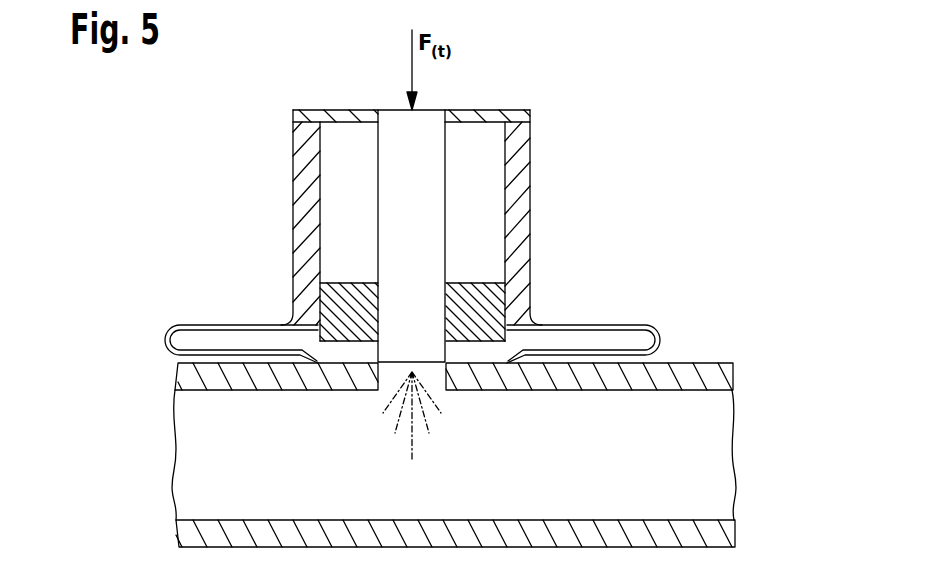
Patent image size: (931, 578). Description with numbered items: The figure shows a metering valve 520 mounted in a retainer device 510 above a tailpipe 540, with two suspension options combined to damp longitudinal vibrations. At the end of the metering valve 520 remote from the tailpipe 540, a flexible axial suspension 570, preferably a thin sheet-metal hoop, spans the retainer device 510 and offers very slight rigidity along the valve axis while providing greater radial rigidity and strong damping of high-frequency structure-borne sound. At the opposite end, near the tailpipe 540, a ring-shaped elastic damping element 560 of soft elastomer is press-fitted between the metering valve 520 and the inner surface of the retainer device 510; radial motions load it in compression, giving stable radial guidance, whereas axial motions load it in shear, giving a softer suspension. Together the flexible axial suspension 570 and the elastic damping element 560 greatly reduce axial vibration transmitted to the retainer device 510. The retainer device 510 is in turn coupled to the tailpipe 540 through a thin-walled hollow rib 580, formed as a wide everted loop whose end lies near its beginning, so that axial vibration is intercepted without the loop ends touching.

The retainer device 510 is at (522, 205).
The metering valve 520 is at (397, 199).
The tailpipe 540 is at (722, 378).
The elastic damping element 560 is at (497, 294).
The flexible axial suspension 570 is at (490, 110).
The hollow rib 580 is at (660, 332).